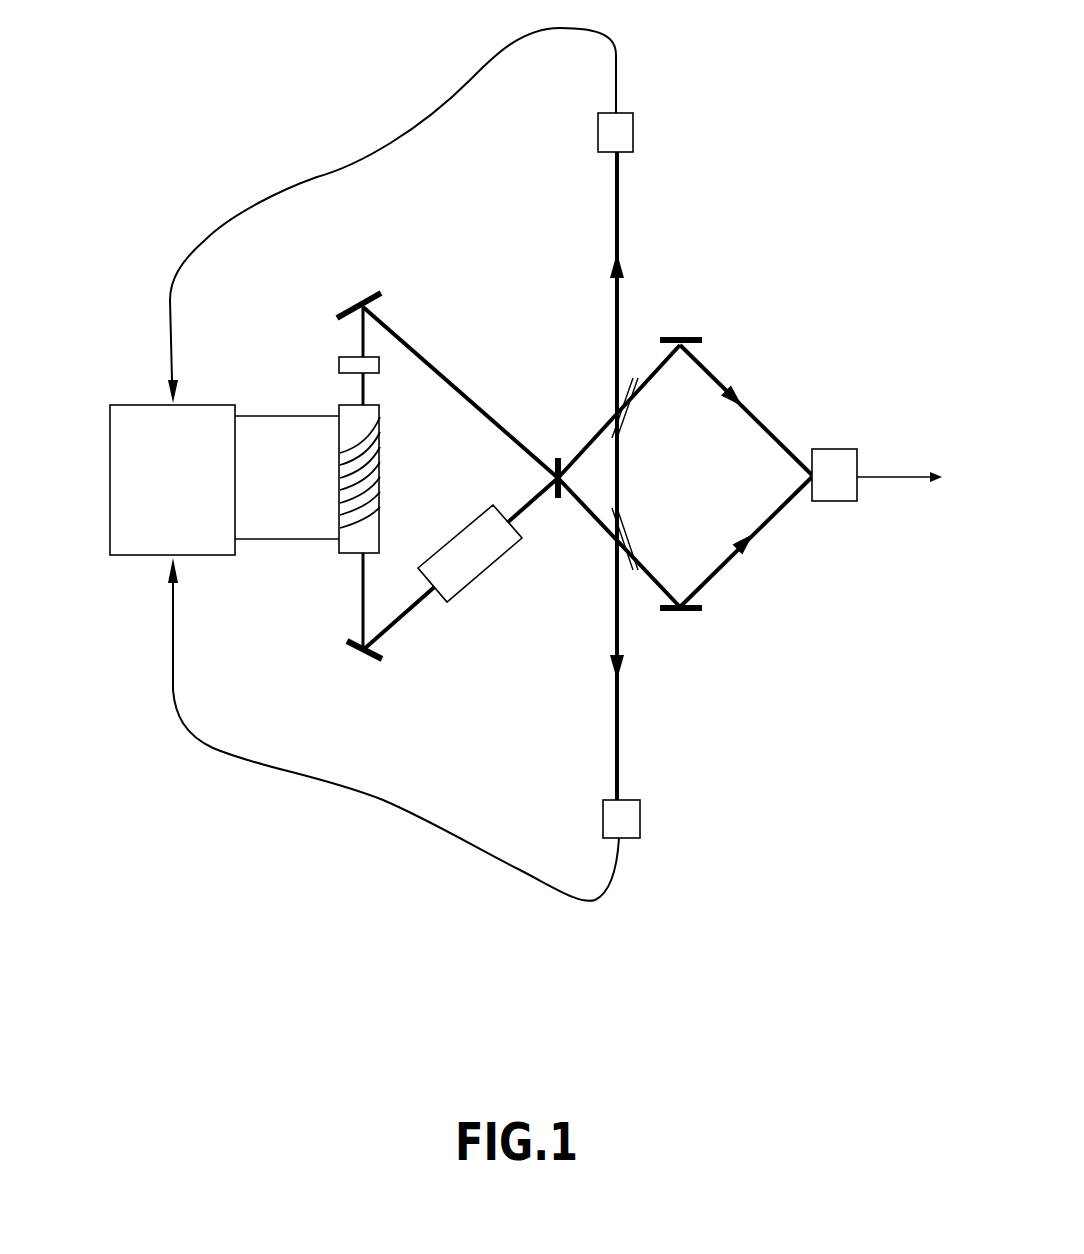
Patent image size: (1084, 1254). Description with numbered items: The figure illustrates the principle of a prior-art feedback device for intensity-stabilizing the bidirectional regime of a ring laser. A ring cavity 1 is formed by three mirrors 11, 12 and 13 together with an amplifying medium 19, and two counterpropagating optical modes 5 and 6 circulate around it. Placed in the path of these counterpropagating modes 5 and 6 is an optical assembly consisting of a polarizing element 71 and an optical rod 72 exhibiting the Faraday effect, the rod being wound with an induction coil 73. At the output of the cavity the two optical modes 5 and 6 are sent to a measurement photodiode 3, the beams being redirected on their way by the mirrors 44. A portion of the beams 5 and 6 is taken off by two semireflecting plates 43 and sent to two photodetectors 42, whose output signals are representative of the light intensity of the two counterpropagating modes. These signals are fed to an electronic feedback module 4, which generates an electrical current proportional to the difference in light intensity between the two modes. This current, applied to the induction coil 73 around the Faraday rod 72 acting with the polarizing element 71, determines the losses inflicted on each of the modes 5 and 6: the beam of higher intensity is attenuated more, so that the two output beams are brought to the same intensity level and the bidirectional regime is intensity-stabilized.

The ring cavity 1 is at (437, 312).
The measurement photodiode 3 is at (840, 467).
The electronic feedback module 4 is at (137, 492).
The counterpropagating optical mode 5 is at (747, 397).
The counterpropagating optical mode 6 is at (752, 552).
The mirror 11 is at (355, 658).
The mirror 12 is at (355, 302).
The mirror 13 is at (553, 462).
The amplifying medium 19 is at (465, 585).
The photodetector 42 is at (622, 138).
The semireflecting plate 43 is at (632, 417).
The mirror 44 is at (683, 337).
The polarizing element 71 is at (350, 363).
The optical rod 72 is at (355, 412).
The induction coil 73 is at (332, 545).